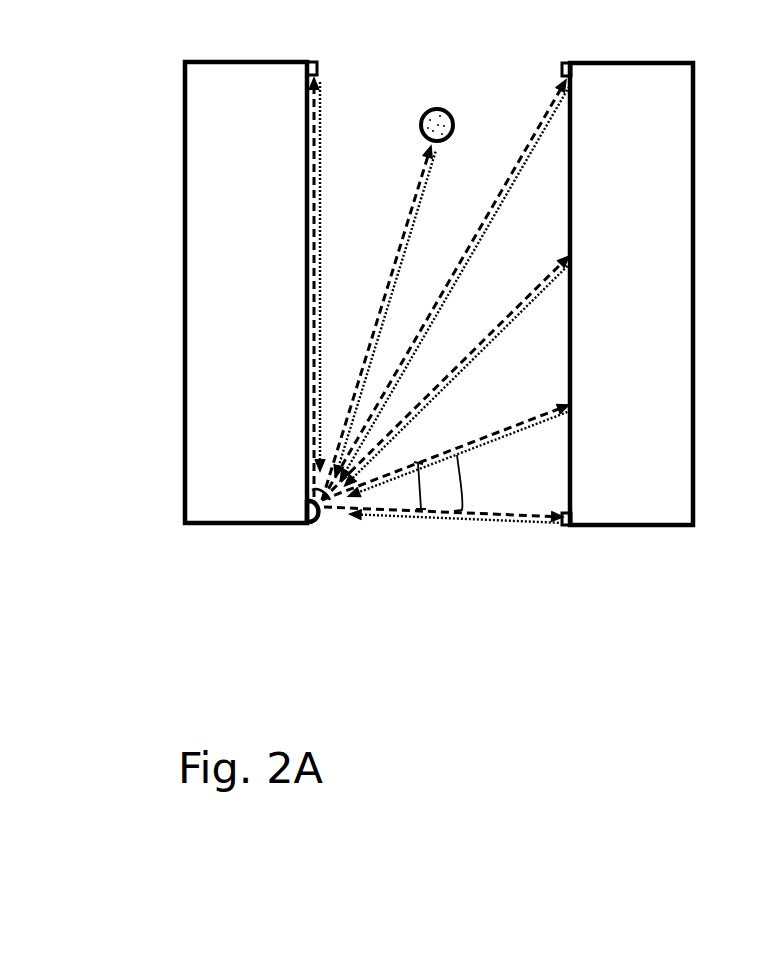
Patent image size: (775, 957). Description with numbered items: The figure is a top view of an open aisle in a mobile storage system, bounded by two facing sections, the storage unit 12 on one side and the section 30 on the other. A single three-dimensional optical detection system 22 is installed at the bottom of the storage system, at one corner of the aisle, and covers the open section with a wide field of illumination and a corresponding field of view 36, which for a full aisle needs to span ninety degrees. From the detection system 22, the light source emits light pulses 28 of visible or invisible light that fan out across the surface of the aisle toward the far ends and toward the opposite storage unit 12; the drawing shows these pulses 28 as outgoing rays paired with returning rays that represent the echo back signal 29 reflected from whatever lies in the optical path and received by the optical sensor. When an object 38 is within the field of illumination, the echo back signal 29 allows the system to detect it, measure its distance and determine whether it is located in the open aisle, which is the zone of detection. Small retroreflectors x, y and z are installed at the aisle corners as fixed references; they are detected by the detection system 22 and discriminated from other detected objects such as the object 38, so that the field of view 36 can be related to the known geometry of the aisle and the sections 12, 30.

The storage unit 12 is at (622, 498).
The detection system 22 is at (311, 523).
The light pulses 28 is at (400, 518).
The echo back signal 29 is at (438, 516).
The section of mobile storage system 30 is at (212, 170).
The field of view 36 is at (331, 510).
The object 38 is at (428, 108).
The retroreflector x is at (310, 62).
The retroreflector y is at (566, 62).
The retroreflector z is at (573, 527).